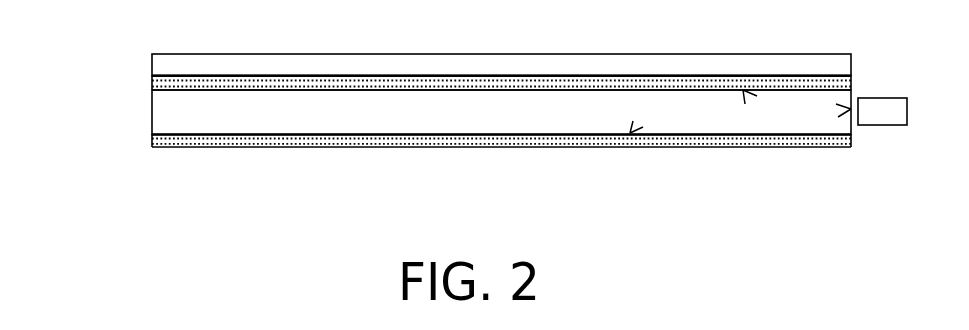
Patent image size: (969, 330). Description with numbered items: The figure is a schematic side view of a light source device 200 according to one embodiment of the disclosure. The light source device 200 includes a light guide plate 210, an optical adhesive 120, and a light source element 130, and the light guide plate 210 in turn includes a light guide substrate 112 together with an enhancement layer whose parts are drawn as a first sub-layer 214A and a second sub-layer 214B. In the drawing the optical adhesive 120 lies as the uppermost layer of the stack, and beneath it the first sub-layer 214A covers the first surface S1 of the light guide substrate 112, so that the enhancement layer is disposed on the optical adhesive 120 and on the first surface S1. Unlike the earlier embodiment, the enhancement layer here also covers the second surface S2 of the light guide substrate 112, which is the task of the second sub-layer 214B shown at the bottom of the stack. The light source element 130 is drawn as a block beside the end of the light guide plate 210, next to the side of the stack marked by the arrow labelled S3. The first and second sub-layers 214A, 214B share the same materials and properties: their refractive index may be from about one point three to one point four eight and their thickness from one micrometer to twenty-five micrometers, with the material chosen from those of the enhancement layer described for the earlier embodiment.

The light source device 200 is at (460, 123).
The optical adhesive 120 is at (165, 62).
The light guide plate 210 is at (432, 124).
The first sub-layer 214A is at (155, 84).
The light guide substrate 112 is at (158, 110).
The second sub-layer 214B is at (459, 158).
The light source element 130 is at (878, 108).
The first surface S1 is at (743, 90).
The second surface S2 is at (630, 133).
The side surface S3 is at (851, 109).